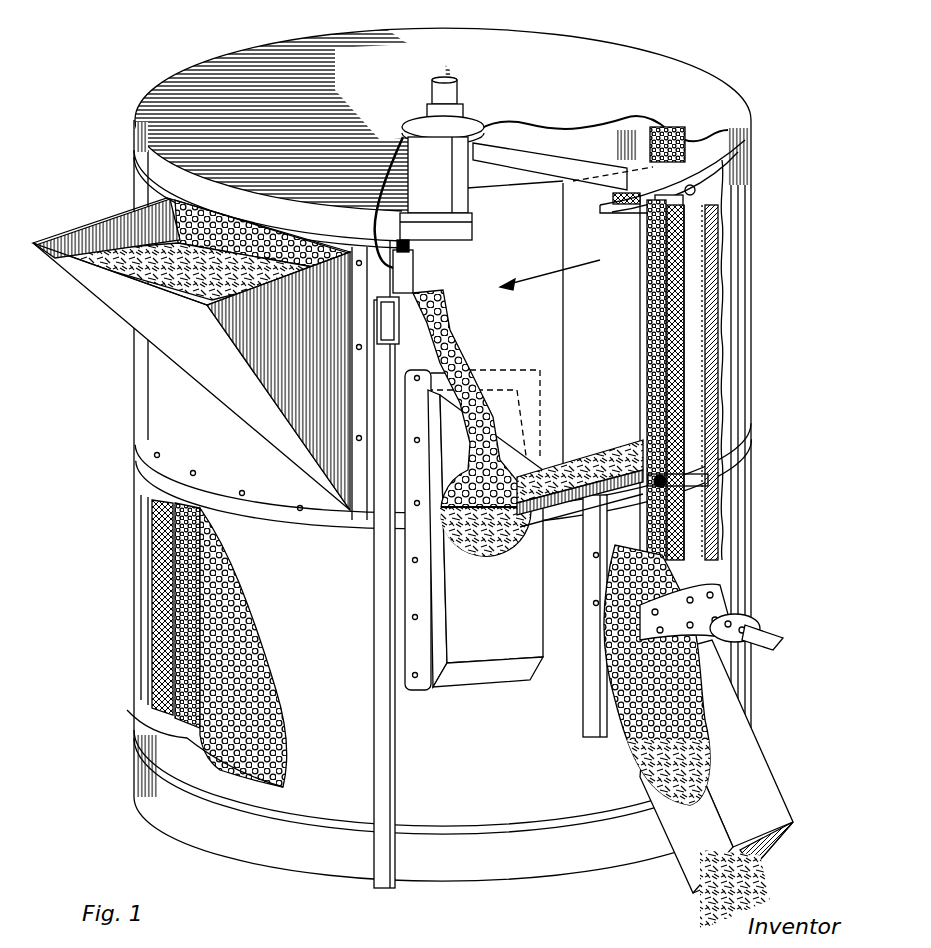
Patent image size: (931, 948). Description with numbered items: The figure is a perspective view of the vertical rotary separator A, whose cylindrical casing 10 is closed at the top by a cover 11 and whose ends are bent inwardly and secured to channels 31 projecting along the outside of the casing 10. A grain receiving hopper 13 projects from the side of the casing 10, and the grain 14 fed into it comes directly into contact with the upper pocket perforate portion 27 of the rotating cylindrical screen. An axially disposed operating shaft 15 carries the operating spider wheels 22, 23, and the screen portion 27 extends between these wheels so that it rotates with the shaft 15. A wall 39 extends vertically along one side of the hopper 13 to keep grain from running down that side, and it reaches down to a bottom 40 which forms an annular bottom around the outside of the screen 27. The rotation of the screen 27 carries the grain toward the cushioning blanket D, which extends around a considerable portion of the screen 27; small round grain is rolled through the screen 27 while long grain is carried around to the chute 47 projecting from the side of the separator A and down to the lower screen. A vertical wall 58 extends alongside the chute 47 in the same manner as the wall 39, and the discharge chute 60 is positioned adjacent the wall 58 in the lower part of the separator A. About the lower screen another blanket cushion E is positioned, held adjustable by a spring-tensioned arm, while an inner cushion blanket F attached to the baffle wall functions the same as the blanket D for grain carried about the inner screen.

The casing 10 is at (749, 222).
The cover 11 is at (628, 57).
The grain receiving hopper 13 is at (90, 238).
The grain 14 is at (170, 255).
The operating shaft 15 is at (447, 82).
The operating spider wheel 22 is at (517, 140).
The operating spider wheel 23 is at (597, 462).
The upper pocket perforate portion 27 is at (222, 226).
The channel 31 is at (392, 322).
The wall 39 is at (405, 265).
The bottom 40 is at (713, 481).
The chute 47 is at (433, 601).
The vertical wall 58 is at (597, 573).
The discharge chute 60 is at (753, 766).
The separator A is at (752, 138).
The cushioning blanket D is at (723, 290).
The blanket cushion E is at (152, 600).
The inner cushion blanket F is at (183, 632).